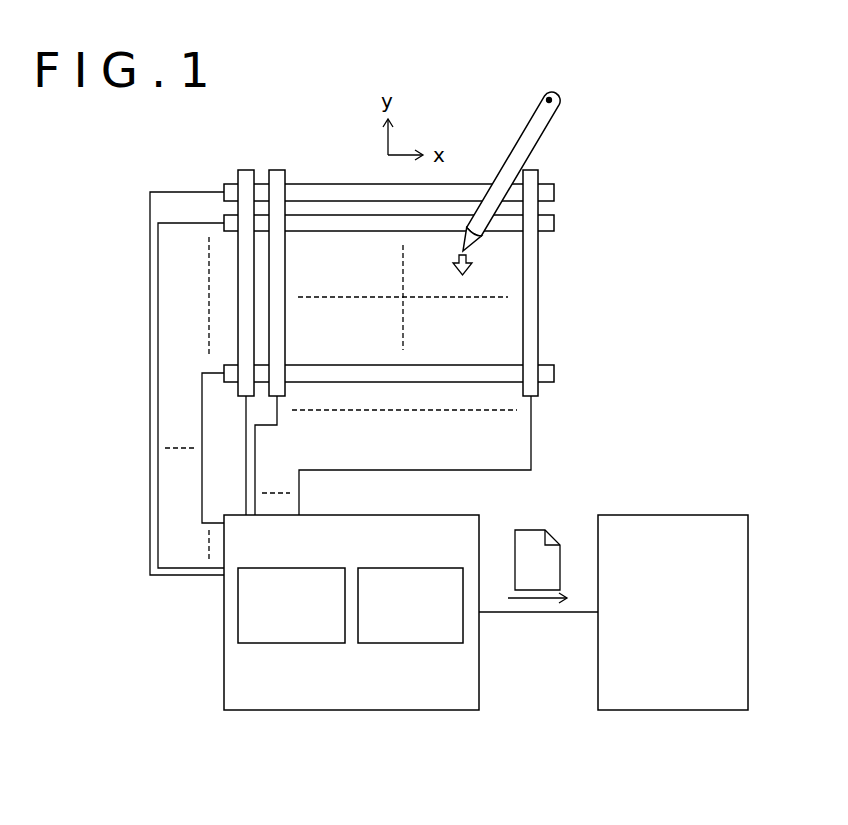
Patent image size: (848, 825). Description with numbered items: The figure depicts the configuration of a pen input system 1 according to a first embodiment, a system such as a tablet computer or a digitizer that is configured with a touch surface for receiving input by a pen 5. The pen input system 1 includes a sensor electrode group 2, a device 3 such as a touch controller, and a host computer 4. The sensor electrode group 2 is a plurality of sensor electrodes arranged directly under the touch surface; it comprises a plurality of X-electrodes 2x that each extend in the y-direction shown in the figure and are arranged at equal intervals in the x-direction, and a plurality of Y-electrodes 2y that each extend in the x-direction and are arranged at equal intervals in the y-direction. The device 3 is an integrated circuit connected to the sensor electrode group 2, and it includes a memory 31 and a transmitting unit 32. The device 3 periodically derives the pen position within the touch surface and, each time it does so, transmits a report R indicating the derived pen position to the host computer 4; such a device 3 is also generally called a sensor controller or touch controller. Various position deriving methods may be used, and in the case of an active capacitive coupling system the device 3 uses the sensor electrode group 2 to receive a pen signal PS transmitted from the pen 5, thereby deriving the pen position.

The pen input system 1 is at (611, 73).
The sensor electrode group 2 is at (612, 207).
The X-electrodes 2x is at (530, 252).
The Y-electrodes 2y is at (543, 222).
The device 3 is at (351, 641).
The memory 31 is at (290, 645).
The transmitting unit 32 is at (410, 645).
The host computer 4 is at (672, 712).
The pen 5 is at (548, 96).
The pen signal PS is at (472, 267).
The report R is at (545, 571).